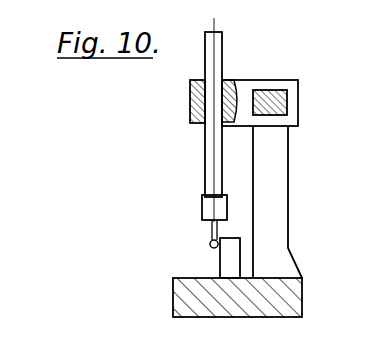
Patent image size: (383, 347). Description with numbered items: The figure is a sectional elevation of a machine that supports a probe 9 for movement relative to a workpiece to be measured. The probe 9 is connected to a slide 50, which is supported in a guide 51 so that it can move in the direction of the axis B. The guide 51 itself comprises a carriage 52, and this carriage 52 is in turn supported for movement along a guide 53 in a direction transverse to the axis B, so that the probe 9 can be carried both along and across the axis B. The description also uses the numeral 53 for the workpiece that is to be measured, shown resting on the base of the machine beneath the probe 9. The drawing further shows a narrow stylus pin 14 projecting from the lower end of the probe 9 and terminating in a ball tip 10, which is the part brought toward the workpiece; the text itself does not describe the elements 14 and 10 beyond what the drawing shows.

The probe 9 is at (198, 205).
The probe ball tip 10 is at (208, 237).
The stylus pin 14 is at (202, 218).
The slide 50 is at (205, 147).
The guide 51 is at (190, 99).
The carriage 52 is at (298, 97).
The guide 53 is at (272, 90).
The axis B is at (213, 176).